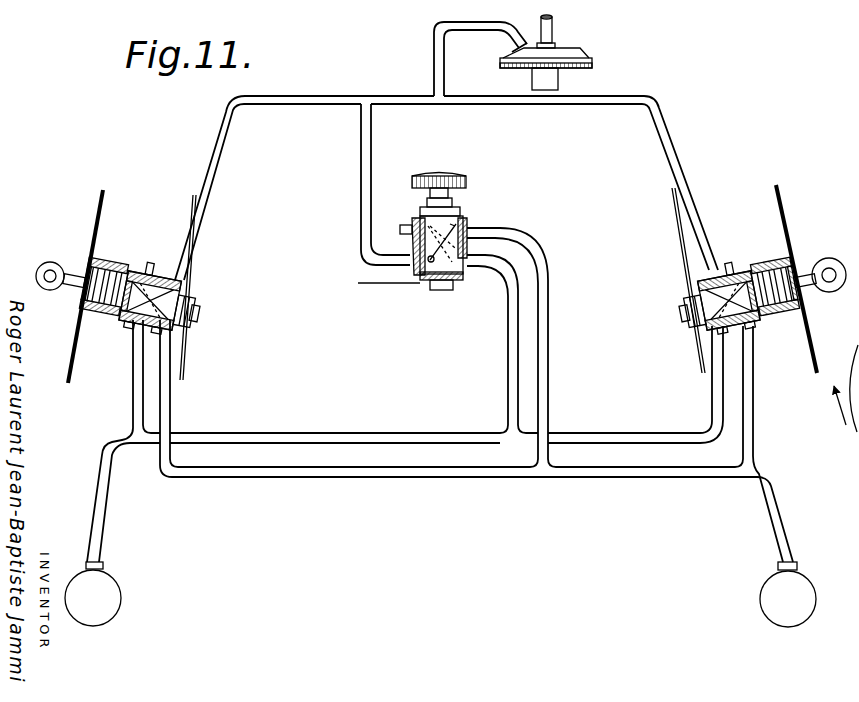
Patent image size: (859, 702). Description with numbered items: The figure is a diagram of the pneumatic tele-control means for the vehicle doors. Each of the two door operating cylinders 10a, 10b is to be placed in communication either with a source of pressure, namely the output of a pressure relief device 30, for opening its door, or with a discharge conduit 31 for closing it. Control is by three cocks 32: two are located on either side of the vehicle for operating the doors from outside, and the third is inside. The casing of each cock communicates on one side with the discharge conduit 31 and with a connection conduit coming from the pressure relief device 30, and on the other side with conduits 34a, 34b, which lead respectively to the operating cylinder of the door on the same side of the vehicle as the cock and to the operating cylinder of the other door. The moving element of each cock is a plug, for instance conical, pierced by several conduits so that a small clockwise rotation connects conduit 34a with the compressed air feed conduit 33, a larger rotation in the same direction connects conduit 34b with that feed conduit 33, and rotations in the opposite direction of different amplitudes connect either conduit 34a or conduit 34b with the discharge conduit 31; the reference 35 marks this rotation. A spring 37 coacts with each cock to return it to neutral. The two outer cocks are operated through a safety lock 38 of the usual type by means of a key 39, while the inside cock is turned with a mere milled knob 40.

The door operating cylinder 10a is at (105, 591).
The door operating cylinder 10b is at (773, 598).
The pressure relief device 30 is at (553, 54).
The discharge conduit 31 is at (736, 262).
The cock 32 is at (165, 280).
The compressed air feed conduit 33 is at (210, 162).
The conduit 34a is at (135, 392).
The conduit 34b is at (164, 393).
The rotation arrow 35 is at (845, 399).
The spring 37 is at (699, 356).
The lock 38 is at (111, 262).
The key 39 is at (68, 272).
The milled knob 40 is at (457, 178).